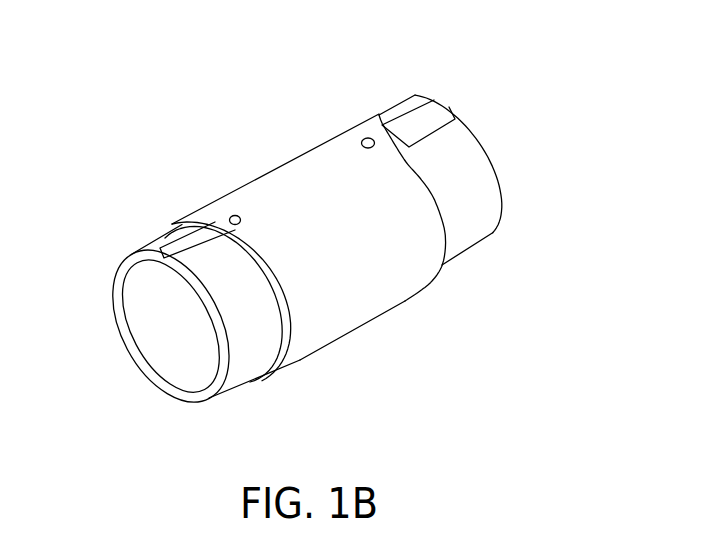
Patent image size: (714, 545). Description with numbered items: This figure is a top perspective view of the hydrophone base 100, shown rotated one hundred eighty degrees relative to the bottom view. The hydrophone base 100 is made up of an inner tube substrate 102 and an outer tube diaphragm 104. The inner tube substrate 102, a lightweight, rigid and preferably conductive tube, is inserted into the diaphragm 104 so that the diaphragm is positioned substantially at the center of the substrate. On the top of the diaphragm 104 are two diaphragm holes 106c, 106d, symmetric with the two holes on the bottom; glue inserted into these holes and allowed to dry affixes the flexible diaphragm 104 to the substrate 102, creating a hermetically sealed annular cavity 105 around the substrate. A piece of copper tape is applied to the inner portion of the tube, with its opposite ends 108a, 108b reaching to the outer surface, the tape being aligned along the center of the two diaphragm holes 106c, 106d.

The hydrophone base 100 is at (322, 249).
The inner tube substrate 102 is at (483, 148).
The outer tube diaphragm 104 is at (318, 178).
The hermetically sealed annular cavity 105 is at (262, 282).
The diaphragm hole on the top 106c is at (235, 213).
The diaphragm hole on the top 106d is at (368, 133).
The copper tape end 108a is at (172, 253).
The copper tape end 108b is at (438, 104).